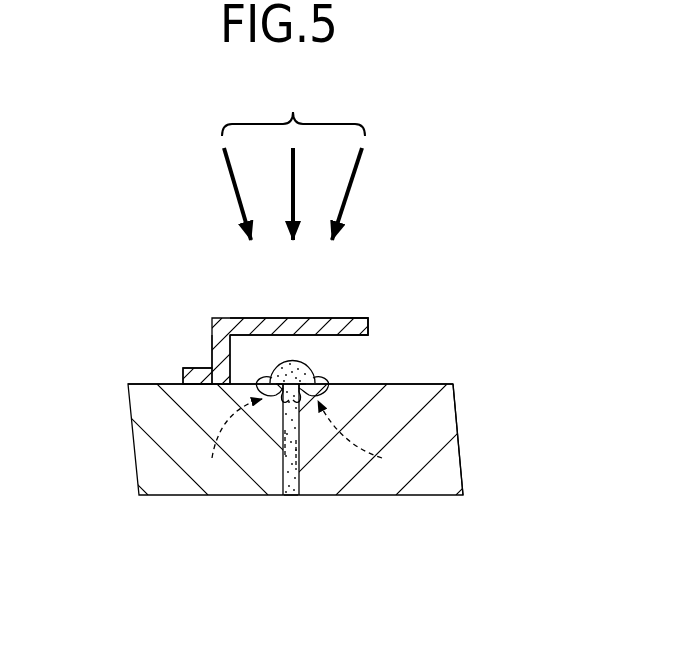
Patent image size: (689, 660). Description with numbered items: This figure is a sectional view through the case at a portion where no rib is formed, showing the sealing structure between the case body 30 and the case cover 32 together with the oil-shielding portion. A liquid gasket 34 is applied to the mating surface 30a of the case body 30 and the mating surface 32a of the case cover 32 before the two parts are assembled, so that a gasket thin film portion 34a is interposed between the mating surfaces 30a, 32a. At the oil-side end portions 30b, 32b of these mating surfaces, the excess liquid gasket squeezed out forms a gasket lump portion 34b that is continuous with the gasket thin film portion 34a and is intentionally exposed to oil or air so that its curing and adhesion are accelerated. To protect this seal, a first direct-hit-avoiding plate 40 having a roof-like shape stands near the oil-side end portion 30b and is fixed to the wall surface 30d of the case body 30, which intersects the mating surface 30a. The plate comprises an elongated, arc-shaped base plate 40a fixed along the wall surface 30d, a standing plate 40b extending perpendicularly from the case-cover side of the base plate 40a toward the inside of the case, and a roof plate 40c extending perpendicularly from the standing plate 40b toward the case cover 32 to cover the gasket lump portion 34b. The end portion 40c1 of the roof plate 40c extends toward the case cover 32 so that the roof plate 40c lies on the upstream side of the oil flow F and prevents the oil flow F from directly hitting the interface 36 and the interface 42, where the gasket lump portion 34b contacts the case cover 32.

The oil flow F is at (293, 161).
The case body 30 is at (168, 522).
The mating surface of the case body 30a is at (283, 490).
The oil-side end portion of the mating surface of the case body 30b is at (272, 403).
The wall surface of the case body 30d is at (133, 383).
The case cover 32 is at (453, 517).
The mating surface of the case cover 32a is at (299, 478).
The oil-side end portion of the mating surface of the case cover 32b is at (310, 403).
The liquid gasket 34 is at (330, 372).
The gasket thin film portion 34a is at (289, 497).
The gasket lump portion 34b is at (300, 367).
The interface 36 is at (231, 441).
The first direct-hit-avoiding plate 40 is at (200, 312).
The base plate 40a is at (190, 367).
The standing plate 40b is at (215, 353).
The roof plate 40c is at (262, 318).
The end portion of the roof plate 40c1 is at (368, 327).
The interface 42 is at (363, 437).